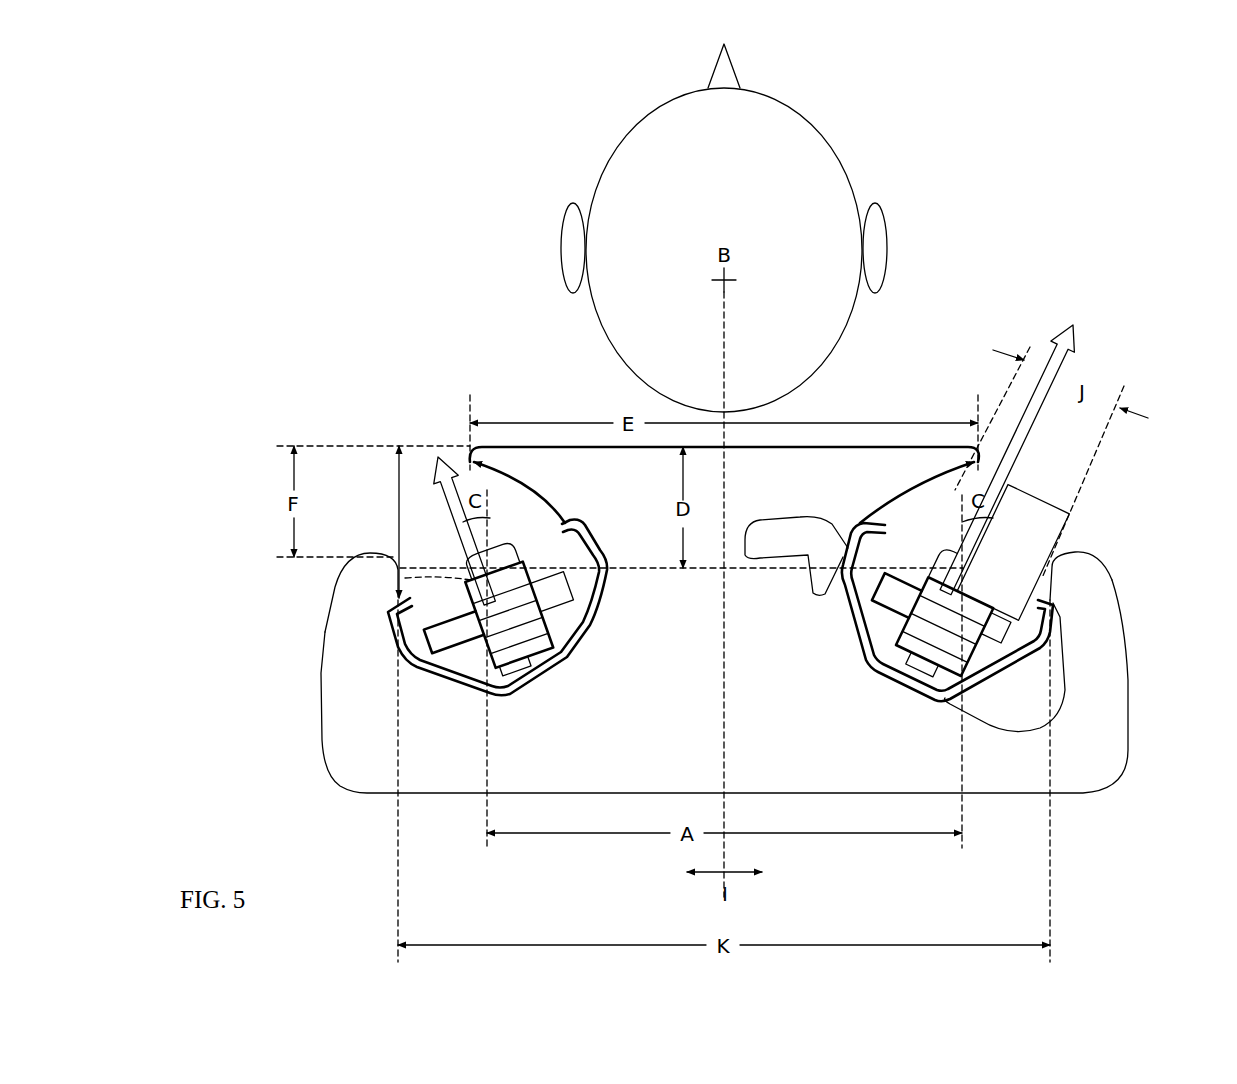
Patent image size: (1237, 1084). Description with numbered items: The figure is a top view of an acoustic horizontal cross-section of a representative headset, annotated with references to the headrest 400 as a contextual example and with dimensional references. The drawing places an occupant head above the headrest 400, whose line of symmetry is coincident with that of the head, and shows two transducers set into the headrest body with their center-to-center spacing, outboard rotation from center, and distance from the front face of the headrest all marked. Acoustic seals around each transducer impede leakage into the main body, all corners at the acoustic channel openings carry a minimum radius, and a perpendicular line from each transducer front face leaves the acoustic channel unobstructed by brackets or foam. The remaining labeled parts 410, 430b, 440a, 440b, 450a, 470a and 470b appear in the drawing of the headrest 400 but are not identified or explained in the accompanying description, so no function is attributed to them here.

The headrest 400 is at (314, 309).
The cushion 410 is at (1133, 752).
The second earcup module 430b is at (449, 556).
The first cushion lobe 440a is at (1098, 602).
The second cushion lobe 440b is at (347, 617).
The first cushion hump 450a is at (1095, 546).
The first bracket 470a is at (874, 623).
The second bracket 470b is at (577, 623).